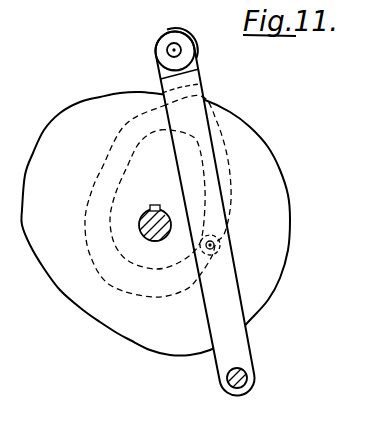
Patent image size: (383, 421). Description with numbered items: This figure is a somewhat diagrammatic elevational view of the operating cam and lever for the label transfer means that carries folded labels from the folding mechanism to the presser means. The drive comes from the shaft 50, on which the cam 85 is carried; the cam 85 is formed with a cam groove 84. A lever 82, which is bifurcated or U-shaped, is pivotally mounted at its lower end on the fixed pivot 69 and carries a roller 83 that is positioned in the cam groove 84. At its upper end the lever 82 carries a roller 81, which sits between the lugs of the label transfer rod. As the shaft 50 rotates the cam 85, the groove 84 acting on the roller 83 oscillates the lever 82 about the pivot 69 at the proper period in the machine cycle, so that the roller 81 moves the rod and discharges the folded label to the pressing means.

The shaft 50 is at (151, 208).
The fixed pivot 69 is at (249, 377).
The roller 81 is at (155, 49).
The lever 82 is at (203, 88).
The roller 83 is at (218, 236).
The cam groove 84 is at (104, 168).
The cam 85 is at (252, 177).